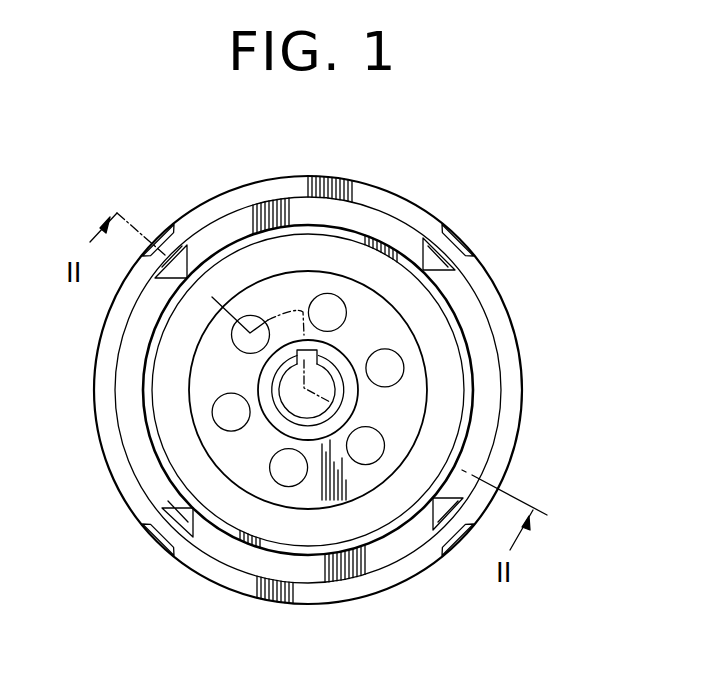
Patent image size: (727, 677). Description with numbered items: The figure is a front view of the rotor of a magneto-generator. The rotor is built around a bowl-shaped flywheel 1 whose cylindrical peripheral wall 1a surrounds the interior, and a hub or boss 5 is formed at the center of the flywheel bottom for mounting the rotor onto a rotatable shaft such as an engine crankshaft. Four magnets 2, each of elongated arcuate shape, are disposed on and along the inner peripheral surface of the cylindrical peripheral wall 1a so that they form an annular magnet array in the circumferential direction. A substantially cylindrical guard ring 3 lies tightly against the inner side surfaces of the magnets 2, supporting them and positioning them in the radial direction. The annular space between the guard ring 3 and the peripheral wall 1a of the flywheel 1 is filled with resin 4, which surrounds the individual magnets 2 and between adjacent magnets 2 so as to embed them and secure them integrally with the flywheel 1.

The flywheel 1 is at (417, 217).
The cylindrical peripheral wall 1a is at (390, 198).
The magnets 2 is at (253, 215).
The guard ring 3 is at (458, 325).
The resin 4 is at (470, 253).
The boss 5 is at (343, 358).